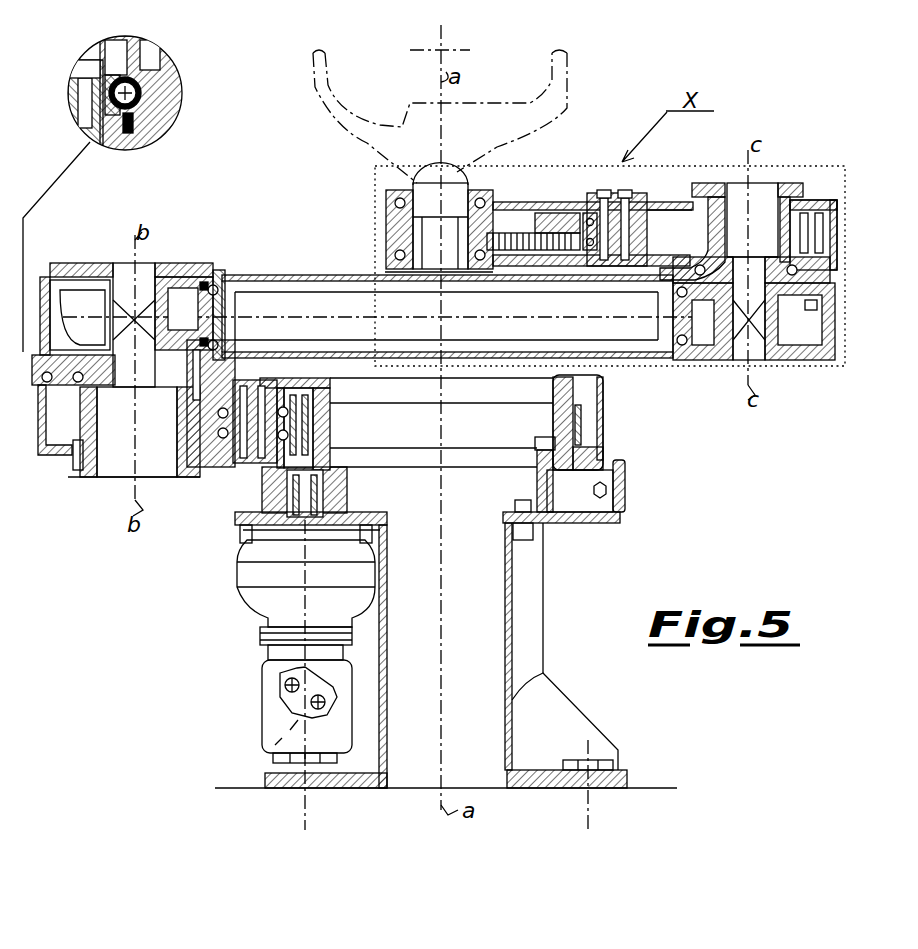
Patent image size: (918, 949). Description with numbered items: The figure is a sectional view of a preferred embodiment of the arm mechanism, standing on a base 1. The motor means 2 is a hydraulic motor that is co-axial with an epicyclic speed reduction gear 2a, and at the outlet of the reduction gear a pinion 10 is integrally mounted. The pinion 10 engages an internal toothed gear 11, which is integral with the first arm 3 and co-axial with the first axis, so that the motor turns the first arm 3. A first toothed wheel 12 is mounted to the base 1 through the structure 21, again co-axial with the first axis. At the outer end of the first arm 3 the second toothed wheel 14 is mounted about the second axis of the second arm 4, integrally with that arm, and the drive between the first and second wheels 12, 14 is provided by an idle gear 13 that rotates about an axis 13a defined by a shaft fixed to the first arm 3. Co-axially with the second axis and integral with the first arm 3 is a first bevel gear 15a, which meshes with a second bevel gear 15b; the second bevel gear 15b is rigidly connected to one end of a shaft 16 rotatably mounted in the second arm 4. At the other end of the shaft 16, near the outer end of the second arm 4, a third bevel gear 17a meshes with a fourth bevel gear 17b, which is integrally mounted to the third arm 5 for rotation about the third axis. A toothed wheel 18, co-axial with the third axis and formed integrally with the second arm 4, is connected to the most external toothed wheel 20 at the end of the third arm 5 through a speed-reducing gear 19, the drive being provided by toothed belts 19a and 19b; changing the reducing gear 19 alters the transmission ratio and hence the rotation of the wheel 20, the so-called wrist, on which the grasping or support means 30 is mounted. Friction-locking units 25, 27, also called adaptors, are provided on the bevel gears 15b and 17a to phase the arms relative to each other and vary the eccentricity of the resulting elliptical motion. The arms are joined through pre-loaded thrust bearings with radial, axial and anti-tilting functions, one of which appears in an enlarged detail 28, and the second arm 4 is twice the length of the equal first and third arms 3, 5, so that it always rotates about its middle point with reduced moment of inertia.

The base 1 is at (548, 673).
The motor means 2 is at (270, 705).
The epicyclic speed reduction gear 2a is at (240, 578).
The first arm 3 is at (213, 470).
The second arm 4 is at (267, 277).
The third arm 5 is at (567, 213).
The pinion 10 is at (263, 487).
The internal toothed gear 11 is at (623, 497).
The first toothed wheel 12 is at (580, 422).
The idle gear 13 is at (335, 423).
The axis 13a is at (280, 372).
The second toothed wheel 14 is at (70, 440).
The first bevel gear 15a is at (88, 277).
The second bevel gear 15b is at (172, 273).
The shaft 16 is at (323, 290).
The third bevel gear 17a is at (716, 357).
The fourth bevel gear 17b is at (788, 277).
The toothed wheel 18 is at (793, 208).
The speed-reducing gear 19 is at (632, 193).
The toothed belt 19a is at (720, 210).
The toothed belt 19b is at (583, 182).
The most external toothed wheel 20 is at (482, 233).
The structure 21 is at (550, 523).
The friction-locking unit 25 is at (230, 277).
The friction-locking unit 27 is at (708, 322).
The bearing detail 28 is at (165, 117).
The grasping or support means 30 is at (565, 80).